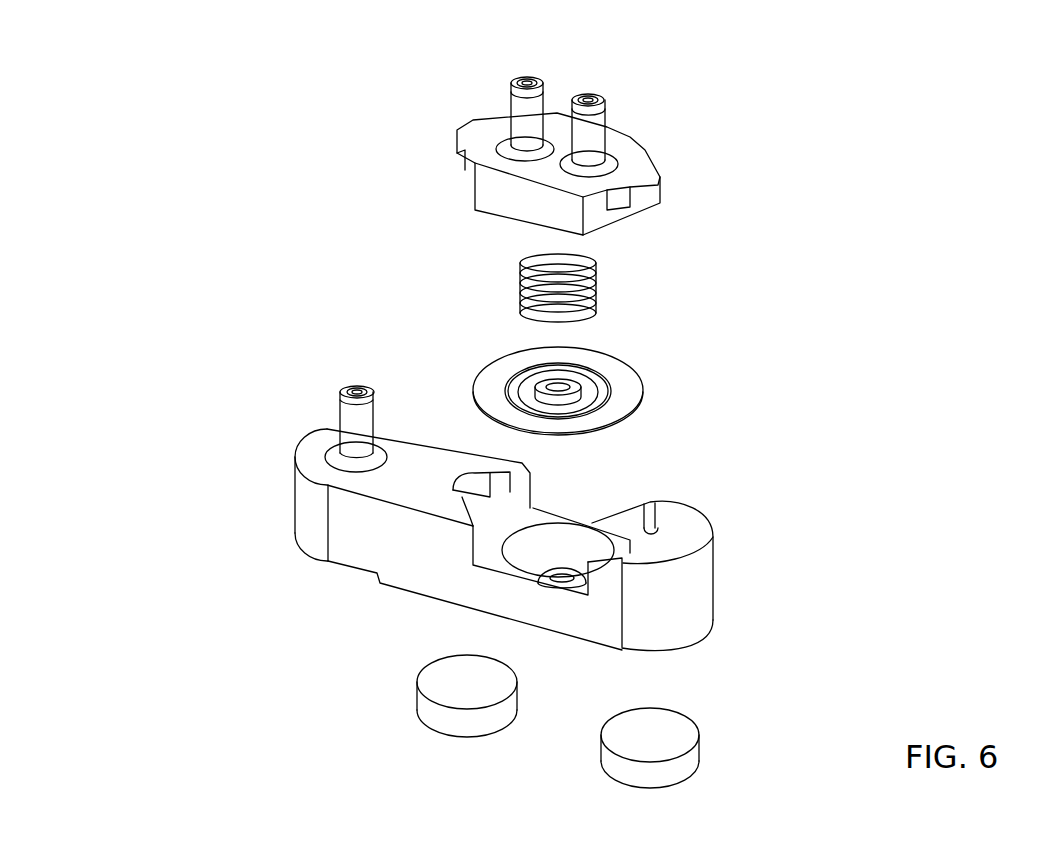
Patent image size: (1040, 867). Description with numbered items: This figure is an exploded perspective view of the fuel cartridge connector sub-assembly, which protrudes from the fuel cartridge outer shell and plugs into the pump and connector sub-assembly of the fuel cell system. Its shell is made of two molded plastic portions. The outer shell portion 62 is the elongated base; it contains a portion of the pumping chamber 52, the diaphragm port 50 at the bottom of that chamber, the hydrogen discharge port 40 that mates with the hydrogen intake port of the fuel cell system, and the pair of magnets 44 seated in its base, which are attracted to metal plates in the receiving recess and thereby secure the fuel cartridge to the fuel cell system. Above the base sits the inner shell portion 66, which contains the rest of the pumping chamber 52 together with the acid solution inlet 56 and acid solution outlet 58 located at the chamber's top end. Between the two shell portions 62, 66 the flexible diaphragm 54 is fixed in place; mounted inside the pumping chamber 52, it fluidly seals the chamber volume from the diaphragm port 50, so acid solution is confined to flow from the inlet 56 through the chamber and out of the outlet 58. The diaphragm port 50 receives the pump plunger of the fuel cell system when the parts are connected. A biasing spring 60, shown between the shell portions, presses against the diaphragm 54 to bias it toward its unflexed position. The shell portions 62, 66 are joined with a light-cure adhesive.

The hydrogen discharge port 40 is at (350, 418).
The magnets 44 is at (613, 765).
The diaphragm port 50 is at (588, 592).
The pumping chamber 52 is at (575, 540).
The flexible diaphragm 54 is at (628, 392).
The acid solution inlet 56 is at (508, 102).
The acid solution outlet 58 is at (597, 123).
The biasing spring 60 is at (597, 297).
The outer shell portion 62 is at (713, 565).
The inner shell portion 66 is at (645, 172).